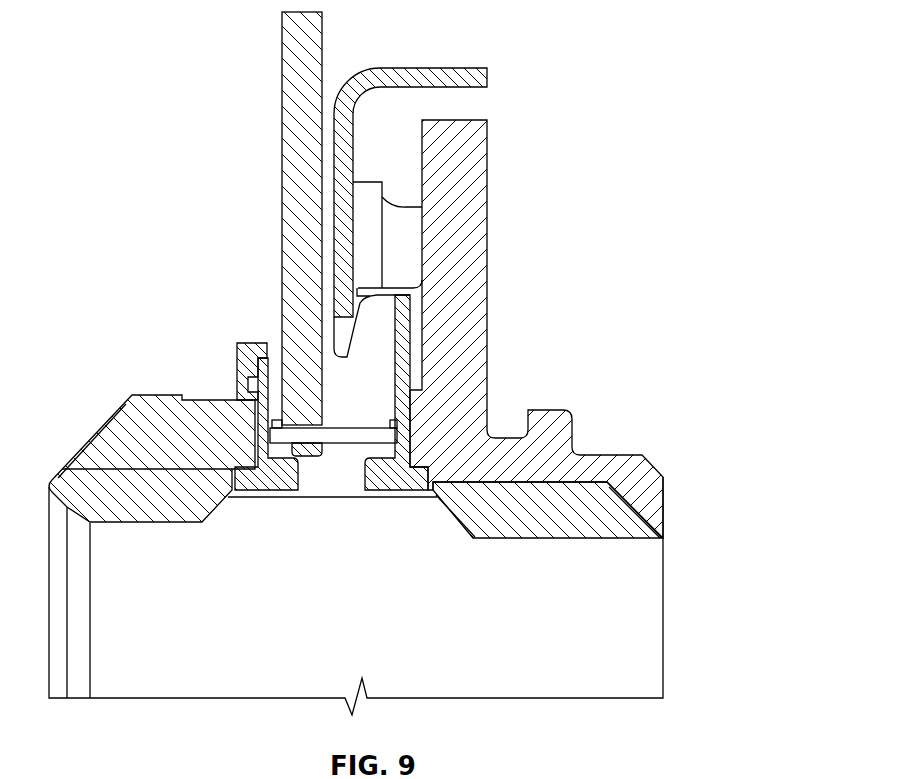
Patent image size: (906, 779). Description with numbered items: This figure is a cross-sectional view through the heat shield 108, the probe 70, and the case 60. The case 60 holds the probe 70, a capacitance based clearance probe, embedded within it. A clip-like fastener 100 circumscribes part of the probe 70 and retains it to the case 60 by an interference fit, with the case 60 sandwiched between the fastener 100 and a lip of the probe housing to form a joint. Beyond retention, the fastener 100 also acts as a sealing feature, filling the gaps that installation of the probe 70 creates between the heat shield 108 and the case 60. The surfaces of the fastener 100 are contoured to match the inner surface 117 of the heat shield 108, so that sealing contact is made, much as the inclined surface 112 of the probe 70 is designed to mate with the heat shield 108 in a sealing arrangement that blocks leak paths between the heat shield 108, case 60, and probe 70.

The case 60 is at (478, 205).
The probe 70 is at (299, 190).
The fastener 100 is at (250, 390).
The heat shield 108 is at (431, 76).
The inclined surface 112 is at (356, 303).
The inner surface 117 is at (358, 323).